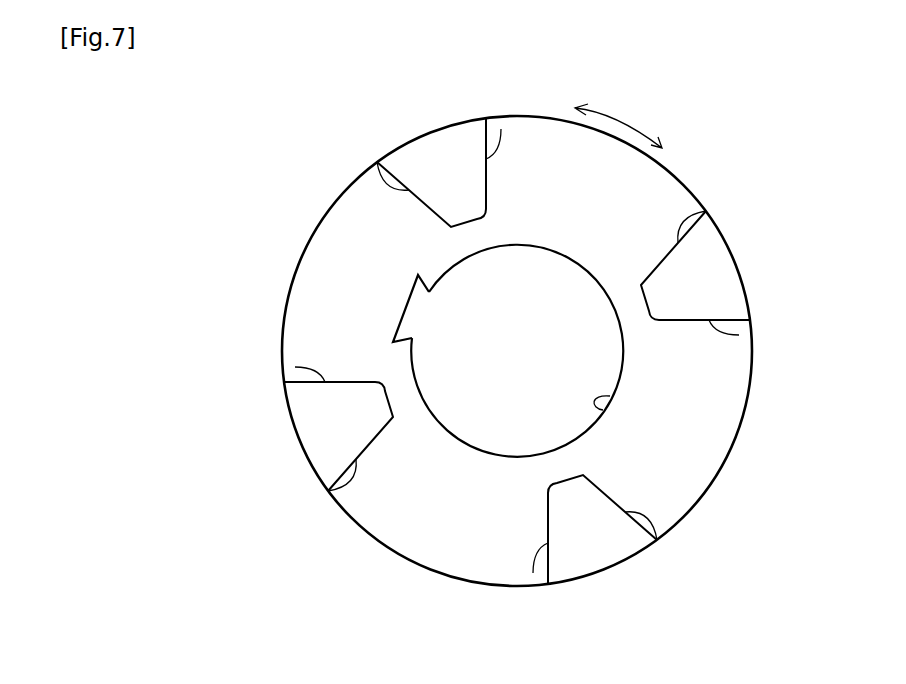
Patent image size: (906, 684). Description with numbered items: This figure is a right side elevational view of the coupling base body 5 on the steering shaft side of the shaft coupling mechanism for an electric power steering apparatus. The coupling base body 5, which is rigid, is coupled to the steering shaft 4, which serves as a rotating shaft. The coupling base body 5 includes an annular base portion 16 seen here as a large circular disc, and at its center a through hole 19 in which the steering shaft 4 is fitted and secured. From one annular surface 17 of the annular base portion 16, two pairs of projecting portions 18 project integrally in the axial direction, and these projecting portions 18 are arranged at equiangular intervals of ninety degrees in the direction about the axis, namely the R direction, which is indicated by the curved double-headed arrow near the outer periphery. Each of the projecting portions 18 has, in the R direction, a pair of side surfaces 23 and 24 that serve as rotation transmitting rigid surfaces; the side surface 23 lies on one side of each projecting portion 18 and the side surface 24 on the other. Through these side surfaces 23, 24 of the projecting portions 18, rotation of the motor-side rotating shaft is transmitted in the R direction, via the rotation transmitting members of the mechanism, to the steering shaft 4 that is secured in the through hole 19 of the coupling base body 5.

The steering shaft 4 is at (521, 367).
The coupling base body 5 is at (277, 304).
The annular base portion 16 is at (368, 237).
The annular surface 17 is at (433, 522).
The projecting portions 18 is at (445, 163).
The through hole 19 is at (603, 410).
The side surface 23 is at (377, 162).
The side surface 24 is at (501, 129).
The R direction R is at (615, 118).